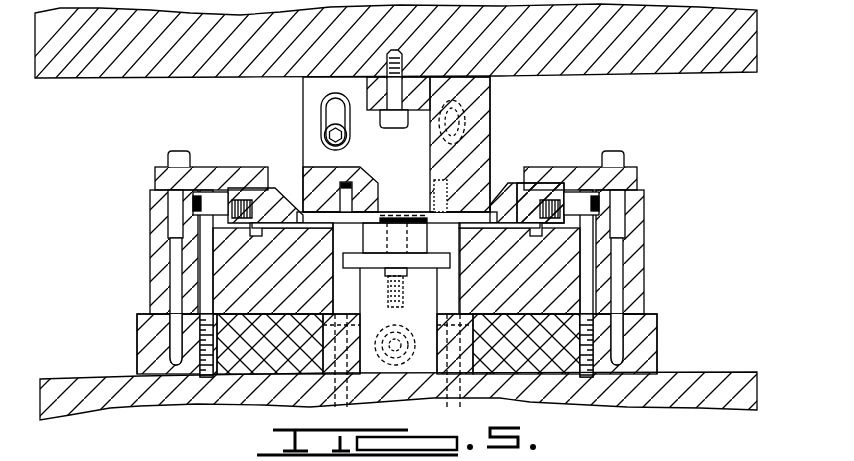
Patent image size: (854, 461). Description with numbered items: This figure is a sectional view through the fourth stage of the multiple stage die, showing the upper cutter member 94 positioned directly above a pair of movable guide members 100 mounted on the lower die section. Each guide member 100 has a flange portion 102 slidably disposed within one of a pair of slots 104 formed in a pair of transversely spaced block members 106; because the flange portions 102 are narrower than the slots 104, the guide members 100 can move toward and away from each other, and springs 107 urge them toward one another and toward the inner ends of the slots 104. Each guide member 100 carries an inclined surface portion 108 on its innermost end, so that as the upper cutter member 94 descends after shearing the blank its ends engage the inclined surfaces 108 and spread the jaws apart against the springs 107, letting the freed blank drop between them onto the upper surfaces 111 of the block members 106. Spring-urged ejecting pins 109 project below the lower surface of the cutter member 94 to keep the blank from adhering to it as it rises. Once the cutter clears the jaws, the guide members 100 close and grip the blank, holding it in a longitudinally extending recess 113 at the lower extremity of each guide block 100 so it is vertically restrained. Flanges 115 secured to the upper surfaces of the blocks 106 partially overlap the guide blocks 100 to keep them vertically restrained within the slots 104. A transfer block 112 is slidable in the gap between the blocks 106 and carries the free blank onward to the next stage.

The upper cutter member 94 is at (478, 112).
The movable guide member 100 is at (277, 187).
The flange portion 102 is at (258, 232).
The slot 104 is at (227, 235).
The block member 106 is at (155, 243).
The spring 107 is at (222, 185).
The inclined surface portion 108 is at (352, 158).
The ejecting pin 109 is at (428, 196).
The upper surface 111 is at (290, 226).
The transfer block 112 is at (436, 381).
The longitudinally extending recess 113 is at (408, 233).
The flange 115 is at (157, 174).